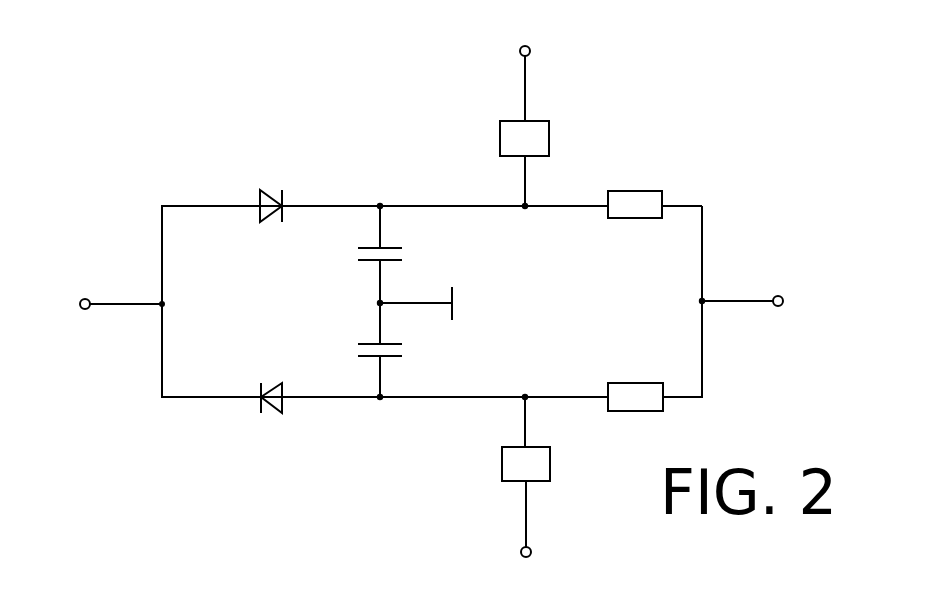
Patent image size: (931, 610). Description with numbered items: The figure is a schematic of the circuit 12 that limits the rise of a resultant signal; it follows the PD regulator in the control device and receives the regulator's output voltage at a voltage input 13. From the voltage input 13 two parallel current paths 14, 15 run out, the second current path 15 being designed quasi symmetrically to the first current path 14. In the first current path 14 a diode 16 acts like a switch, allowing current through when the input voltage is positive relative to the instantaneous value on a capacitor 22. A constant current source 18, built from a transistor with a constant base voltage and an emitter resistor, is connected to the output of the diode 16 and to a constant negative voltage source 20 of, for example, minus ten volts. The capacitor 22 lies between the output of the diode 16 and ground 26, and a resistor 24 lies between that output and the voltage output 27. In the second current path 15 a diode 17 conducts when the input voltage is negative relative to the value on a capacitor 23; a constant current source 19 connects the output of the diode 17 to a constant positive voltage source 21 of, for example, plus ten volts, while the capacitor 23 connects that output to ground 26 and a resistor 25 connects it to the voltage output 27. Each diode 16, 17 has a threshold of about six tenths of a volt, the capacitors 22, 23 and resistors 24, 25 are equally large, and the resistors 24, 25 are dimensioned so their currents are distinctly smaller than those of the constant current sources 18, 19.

The circuit 12 is at (310, 490).
The voltage input 13 is at (85, 298).
The first current path 14 is at (205, 206).
The second current path 15 is at (204, 399).
The diode 16 is at (272, 190).
The diode 17 is at (270, 414).
The constant current source 18 is at (540, 137).
The constant current source 19 is at (540, 468).
The constant negative voltage source 20 is at (530, 50).
The constant positive voltage source 21 is at (532, 555).
The capacitor 22 is at (396, 254).
The capacitor 23 is at (396, 349).
The resistor 24 is at (654, 199).
The resistor 25 is at (650, 401).
The ground 26 is at (456, 291).
The voltage output 27 is at (780, 295).